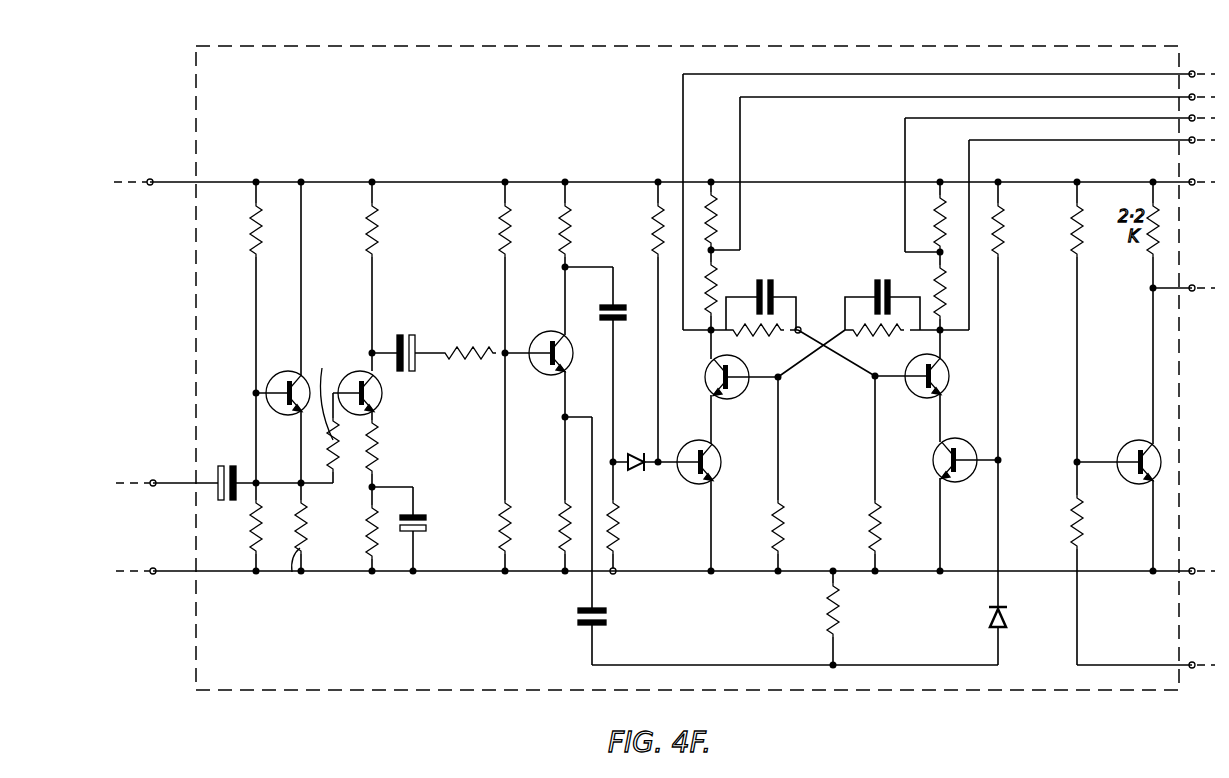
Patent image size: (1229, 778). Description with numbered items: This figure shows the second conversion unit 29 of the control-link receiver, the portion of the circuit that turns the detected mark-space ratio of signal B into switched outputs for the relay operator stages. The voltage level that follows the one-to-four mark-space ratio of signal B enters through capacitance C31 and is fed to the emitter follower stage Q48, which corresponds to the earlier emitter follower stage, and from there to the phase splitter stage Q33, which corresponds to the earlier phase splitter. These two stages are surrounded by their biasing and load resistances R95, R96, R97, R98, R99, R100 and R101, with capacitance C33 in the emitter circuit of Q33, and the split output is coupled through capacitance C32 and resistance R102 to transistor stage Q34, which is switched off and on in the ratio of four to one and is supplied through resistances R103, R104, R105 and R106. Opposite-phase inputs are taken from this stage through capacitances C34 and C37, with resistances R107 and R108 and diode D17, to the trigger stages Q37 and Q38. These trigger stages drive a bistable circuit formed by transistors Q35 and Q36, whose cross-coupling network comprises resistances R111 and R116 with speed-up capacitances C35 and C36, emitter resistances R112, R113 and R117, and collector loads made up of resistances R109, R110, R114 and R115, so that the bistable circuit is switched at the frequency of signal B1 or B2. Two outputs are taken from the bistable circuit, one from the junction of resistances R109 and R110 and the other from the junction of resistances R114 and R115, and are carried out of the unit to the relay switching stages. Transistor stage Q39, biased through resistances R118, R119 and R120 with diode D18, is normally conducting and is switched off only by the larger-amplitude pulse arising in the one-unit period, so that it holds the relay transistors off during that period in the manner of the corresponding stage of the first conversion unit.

The second conversion unit 29 is at (193, 88).
The resistor 150K R95 is at (260, 226).
The resistor 22K R96 is at (258, 540).
The resistor 2.2K R97 is at (308, 552).
The resistor 4.7K R98 is at (368, 225).
The resistor 6.8K R99 is at (330, 445).
The resistor 220 ohm R100 is at (380, 468).
The resistor 220 ohm R101 is at (372, 560).
The resistor 1K R102 is at (448, 350).
The resistor 100K R103 is at (500, 225).
The resistor 47K R104 is at (505, 545).
The resistor 1.5K R105 is at (562, 225).
The resistor 1K R106 is at (565, 505).
The resistor 47K R107 is at (610, 545).
The resistor 15K R108 is at (655, 225).
The resistance R109 is at (708, 225).
The resistance R110 is at (716, 272).
The resistor 4.7K R111 is at (742, 333).
The resistor 33K R112 is at (782, 503).
The resistor 47K R113 is at (830, 630).
The resistance R114 is at (937, 225).
The resistance R115 is at (946, 272).
The resistor 4.7K R116 is at (843, 340).
The resistor 33K R117 is at (873, 505).
The resistor 15K R118 is at (995, 225).
The resistor 22K R119 is at (1072, 225).
The resistor 10K R120 is at (1072, 505).
The capacitor 5 MFD C31 is at (215, 475).
The capacitor 10 MFD C32 is at (406, 334).
The capacitor 50 MFD C33 is at (420, 533).
The capacitance C34 is at (612, 306).
The capacitor 500 C35 is at (768, 300).
The capacitor 500 C36 is at (878, 300).
The capacitance C37 is at (578, 608).
The diode D17 is at (643, 472).
The diode D18 is at (1012, 620).
The phase splitter stage Q33 is at (380, 395).
The transistor stage Q34 is at (549, 333).
The transistor of bistable circuit Q35 is at (732, 400).
The transistor of bistable circuit Q36 is at (918, 398).
The trigger stage Q37 is at (722, 460).
The trigger stage Q38 is at (935, 458).
The transistor stage Q39 is at (1125, 445).
The emitter follower stage Q48 is at (268, 378).